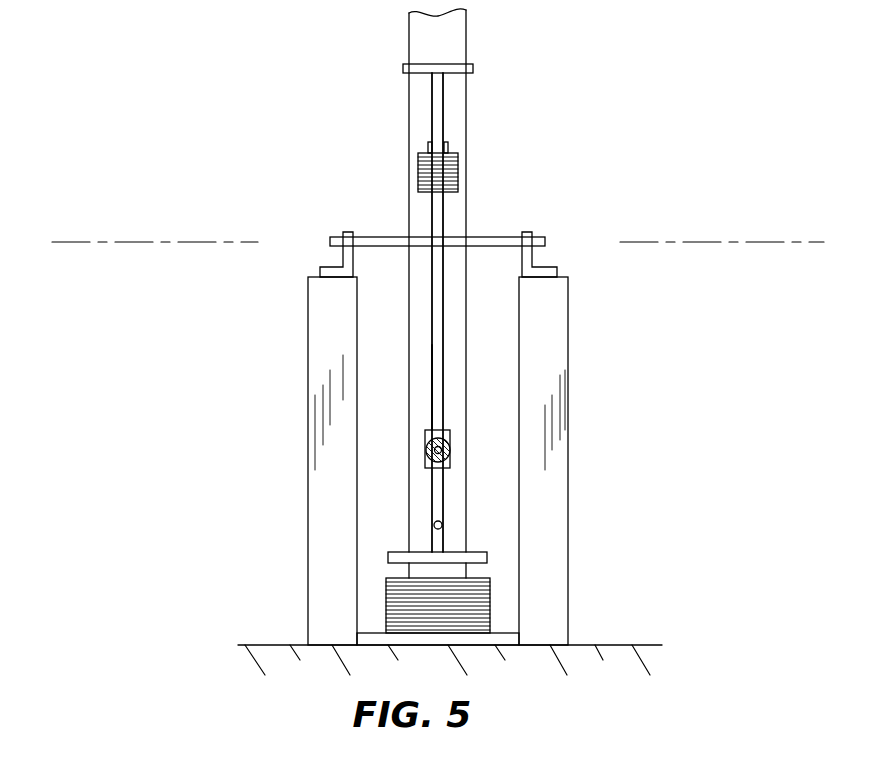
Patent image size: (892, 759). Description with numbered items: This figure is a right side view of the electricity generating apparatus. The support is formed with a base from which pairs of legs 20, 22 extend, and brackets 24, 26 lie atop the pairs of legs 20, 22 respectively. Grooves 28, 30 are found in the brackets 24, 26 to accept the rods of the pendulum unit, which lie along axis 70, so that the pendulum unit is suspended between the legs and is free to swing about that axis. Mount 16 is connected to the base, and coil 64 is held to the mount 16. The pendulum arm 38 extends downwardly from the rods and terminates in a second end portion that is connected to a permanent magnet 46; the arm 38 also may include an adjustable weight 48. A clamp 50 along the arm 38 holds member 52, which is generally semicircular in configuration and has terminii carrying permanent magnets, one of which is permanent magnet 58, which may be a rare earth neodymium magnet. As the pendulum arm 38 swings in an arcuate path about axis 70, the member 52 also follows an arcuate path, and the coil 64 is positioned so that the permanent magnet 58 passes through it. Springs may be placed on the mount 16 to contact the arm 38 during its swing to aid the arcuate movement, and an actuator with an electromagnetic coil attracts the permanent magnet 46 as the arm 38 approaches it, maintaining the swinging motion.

The mount 16 is at (420, 205).
The pair of legs 20 is at (318, 512).
The pair of legs 22 is at (545, 298).
The bracket 24 is at (313, 278).
The bracket 26 is at (548, 268).
The groove 28 is at (342, 251).
The groove 30 is at (527, 232).
The pendulum arm 38 is at (432, 345).
The permanent magnet 46 is at (388, 557).
The adjustable weight 48 is at (446, 526).
The clamp 50 is at (452, 437).
The member 52 is at (425, 452).
The permanent magnet 58 is at (445, 145).
The coil 64 is at (458, 165).
The axis 70 is at (690, 242).